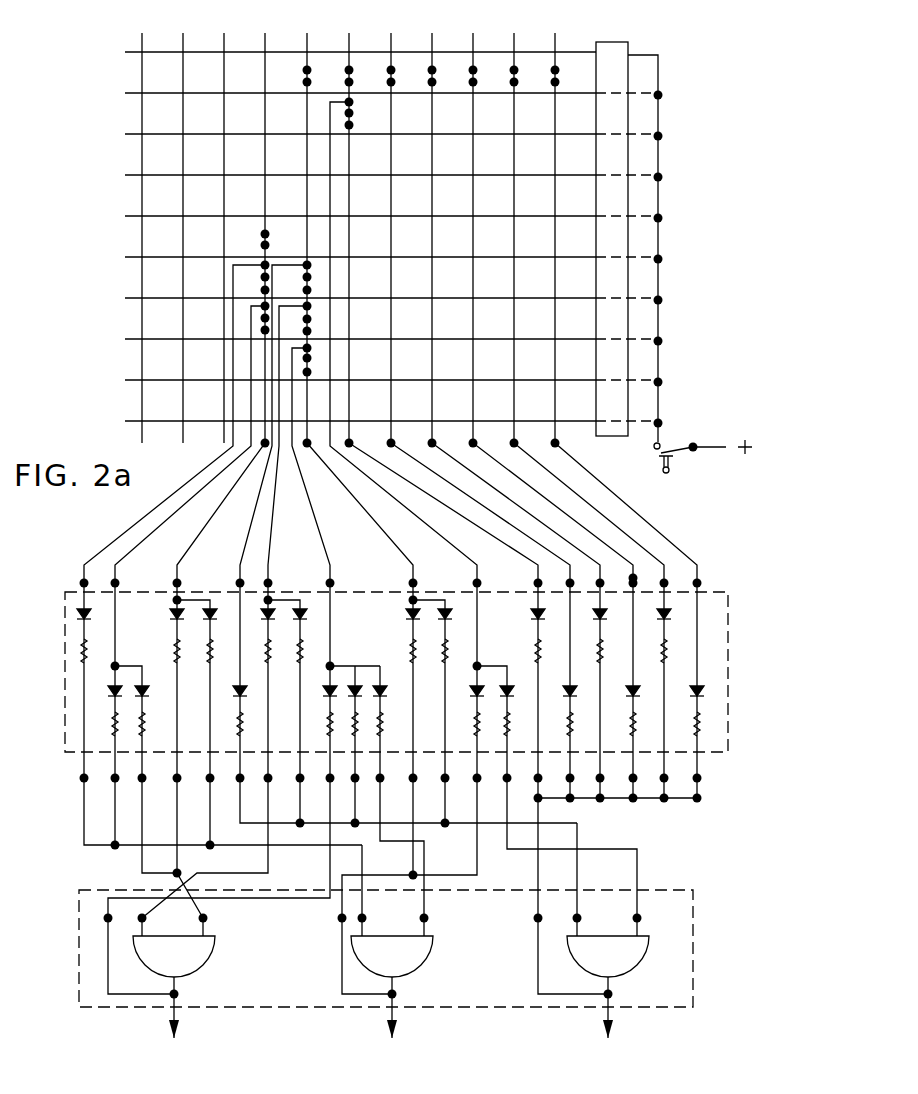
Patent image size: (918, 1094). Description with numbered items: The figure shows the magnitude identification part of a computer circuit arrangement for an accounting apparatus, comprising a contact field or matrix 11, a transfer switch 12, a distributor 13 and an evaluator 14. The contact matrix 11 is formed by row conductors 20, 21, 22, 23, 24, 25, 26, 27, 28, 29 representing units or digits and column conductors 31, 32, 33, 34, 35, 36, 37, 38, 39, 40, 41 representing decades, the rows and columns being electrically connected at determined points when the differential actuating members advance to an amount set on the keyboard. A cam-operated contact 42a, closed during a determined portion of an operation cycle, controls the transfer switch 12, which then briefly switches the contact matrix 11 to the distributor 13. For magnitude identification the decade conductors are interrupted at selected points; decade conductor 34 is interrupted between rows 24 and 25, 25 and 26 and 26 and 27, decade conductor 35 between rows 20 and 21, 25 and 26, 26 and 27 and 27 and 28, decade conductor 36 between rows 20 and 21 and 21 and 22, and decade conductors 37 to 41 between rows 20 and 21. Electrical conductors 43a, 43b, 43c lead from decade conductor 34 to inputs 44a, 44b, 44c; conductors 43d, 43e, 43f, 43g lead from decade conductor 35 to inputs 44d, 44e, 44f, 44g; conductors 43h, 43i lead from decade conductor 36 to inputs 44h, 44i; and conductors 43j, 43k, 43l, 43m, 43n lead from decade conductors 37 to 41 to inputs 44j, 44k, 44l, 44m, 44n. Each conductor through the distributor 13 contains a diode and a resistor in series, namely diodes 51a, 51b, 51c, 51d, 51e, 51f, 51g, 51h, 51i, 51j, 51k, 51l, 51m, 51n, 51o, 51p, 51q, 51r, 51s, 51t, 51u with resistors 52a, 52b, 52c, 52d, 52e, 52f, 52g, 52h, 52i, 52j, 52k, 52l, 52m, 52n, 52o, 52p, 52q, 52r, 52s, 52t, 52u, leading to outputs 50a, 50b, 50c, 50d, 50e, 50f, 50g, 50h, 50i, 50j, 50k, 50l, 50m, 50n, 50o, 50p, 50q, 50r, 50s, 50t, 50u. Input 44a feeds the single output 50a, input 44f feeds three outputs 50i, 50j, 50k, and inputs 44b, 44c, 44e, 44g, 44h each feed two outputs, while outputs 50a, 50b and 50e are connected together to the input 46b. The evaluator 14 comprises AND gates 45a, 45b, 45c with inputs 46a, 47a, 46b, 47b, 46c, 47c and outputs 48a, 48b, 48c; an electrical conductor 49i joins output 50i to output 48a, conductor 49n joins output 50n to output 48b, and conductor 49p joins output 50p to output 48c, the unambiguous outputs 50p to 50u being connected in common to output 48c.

The contact field or matrix 11 is at (765, 168).
The transfer switch 12 is at (737, 33).
The distributor 13 is at (790, 611).
The evaluator 14 is at (693, 961).
The row conductor 20 is at (345, 52).
The row conductor 21 is at (378, 93).
The row conductor 22 is at (378, 134).
The row conductor 23 is at (378, 175).
The row conductor 24 is at (378, 216).
The row conductor 25 is at (378, 257).
The row conductor 26 is at (378, 298).
The row conductor 27 is at (378, 339).
The row conductor 28 is at (378, 380).
The row conductor 29 is at (378, 421).
The decade conductor 31 is at (142, 228).
The decade conductor 32 is at (183, 228).
The decade conductor 33 is at (224, 228).
The decade conductor 34 is at (253, 231).
The decade conductor 35 is at (294, 231).
The decade conductor 36 is at (344, 231).
The decade conductor 37 is at (391, 231).
The decade conductor 38 is at (432, 231).
The decade conductor 39 is at (473, 231).
The decade conductor 40 is at (514, 231).
The decade conductor 41 is at (555, 231).
The cam-operated contact 42a is at (680, 445).
The electrical conductor 43a is at (164, 499).
The electrical conductor 43b is at (172, 514).
The electrical conductor 43c is at (192, 541).
The electrical conductor 43d is at (252, 509).
The electrical conductor 43e is at (274, 522).
The electrical conductor 43f is at (319, 529).
The electrical conductor 43g is at (370, 515).
The electrical conductor 43h is at (441, 537).
The electrical conductor 43i is at (460, 515).
The electrical conductor 43j is at (518, 532).
The electrical conductor 43k is at (536, 519).
The electrical conductor 43l is at (588, 534).
The electrical conductor 43m is at (604, 517).
The electrical conductor 43n is at (660, 535).
The distributor input 44a is at (82, 582).
The distributor input 44b is at (117, 582).
The distributor input 44c is at (179, 582).
The distributor input 44d is at (239, 582).
The distributor input 44e is at (270, 582).
The distributor input 44f is at (332, 582).
The distributor input 44g is at (411, 583).
The distributor input 44h is at (475, 583).
The distributor input 44i is at (536, 583).
The distributor input 44j is at (568, 583).
The distributor input 44k is at (599, 583).
The distributor input 44l is at (631, 583).
The distributor input 44m is at (663, 583).
The distributor input 44n is at (696, 583).
The AND gate 45a is at (208, 954).
The AND gate 45b is at (426, 954).
The AND gate 45c is at (642, 954).
The AND gate input 46a is at (144, 928).
The AND gate input 46b is at (364, 928).
The AND gate input 46c is at (579, 928).
The AND gate input 47a is at (205, 928).
The AND gate input 47b is at (426, 928).
The AND gate input 47c is at (639, 928).
The AND gate output 48a is at (178, 1010).
The AND gate output 48b is at (396, 1010).
The AND gate output 48c is at (612, 1010).
The electrical conductor 49i is at (327, 853).
The electrical conductor 49n is at (477, 858).
The electrical conductor 49p is at (539, 841).
The distributor output 50a is at (81, 780).
The distributor output 50b is at (112, 780).
The distributor output 50c is at (140, 780).
The distributor output 50d is at (174, 780).
The distributor output 50e is at (207, 780).
The distributor output 50f is at (237, 780).
The distributor output 50g is at (265, 780).
The distributor output 50h is at (297, 780).
The distributor output 50i is at (327, 780).
The distributor output 50j is at (353, 780).
The distributor output 50k is at (378, 780).
The distributor output 50l is at (410, 780).
The distributor output 50m is at (443, 780).
The distributor output 50n is at (475, 780).
The distributor output 50o is at (505, 780).
The distributor output 50p is at (536, 780).
The distributor output 50q is at (568, 780).
The distributor output 50r is at (597, 780).
The distributor output 50s is at (630, 780).
The distributor output 50t is at (661, 780).
The distributor output 50u is at (694, 780).
The diode 51a is at (74, 617).
The diode 51b is at (109, 689).
The diode 51c is at (144, 689).
The diode 51d is at (170, 613).
The diode 51e is at (213, 613).
The diode 51f is at (233, 689).
The diode 51g is at (265, 620).
The diode 51h is at (296, 610).
The diode 51i is at (324, 689).
The diode 51j is at (355, 691).
The diode 51k is at (382, 689).
The diode 51l is at (405, 618).
The diode 51m is at (449, 612).
The diode 51n is at (471, 688).
The diode 51o is at (509, 688).
The diode 51p is at (531, 612).
The diode 51q is at (571, 688).
The diode 51r is at (597, 612).
The diode 51s is at (634, 688).
The diode 51t is at (661, 612).
The diode 51u is at (698, 688).
The resistor 52a is at (74, 652).
The resistor 52b is at (110, 720).
The resistor 52c is at (144, 720).
The resistor 52d is at (171, 651).
The resistor 52e is at (212, 648).
The resistor 52f is at (235, 720).
The resistor 52g is at (265, 651).
The resistor 52h is at (300, 648).
The resistor 52i is at (326, 720).
The resistor 52j is at (355, 724).
The resistor 52k is at (381, 720).
The resistor 52l is at (405, 651).
The resistor 52m is at (448, 648).
The resistor 52n is at (472, 720).
The resistor 52o is at (509, 720).
The resistor 52p is at (532, 648).
The resistor 52q is at (572, 720).
The resistor 52r is at (597, 648).
The resistor 52s is at (635, 720).
The resistor 52t is at (661, 648).
The resistor 52u is at (699, 720).